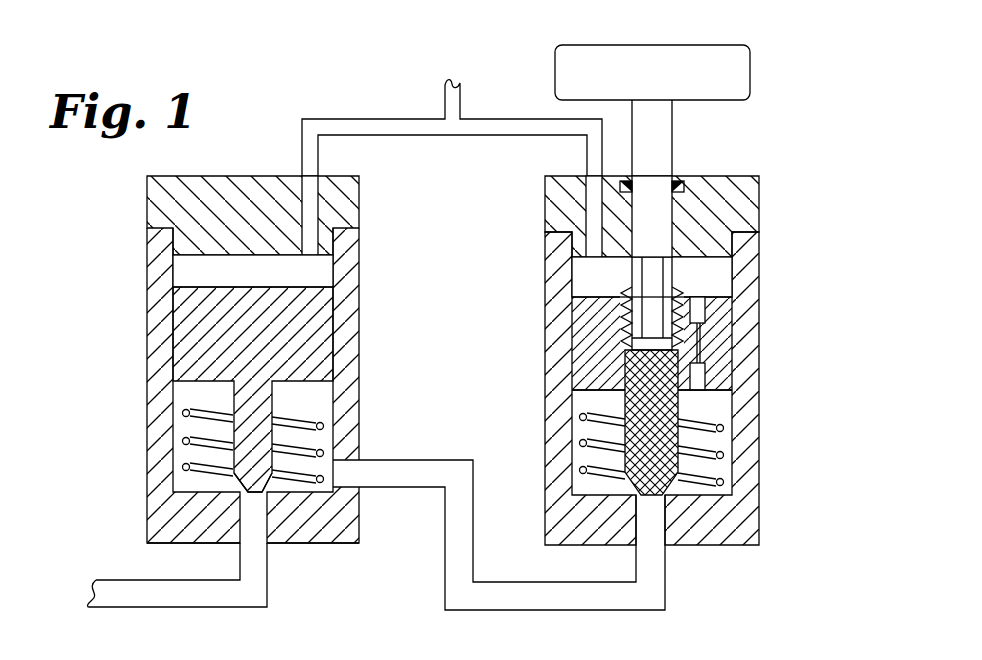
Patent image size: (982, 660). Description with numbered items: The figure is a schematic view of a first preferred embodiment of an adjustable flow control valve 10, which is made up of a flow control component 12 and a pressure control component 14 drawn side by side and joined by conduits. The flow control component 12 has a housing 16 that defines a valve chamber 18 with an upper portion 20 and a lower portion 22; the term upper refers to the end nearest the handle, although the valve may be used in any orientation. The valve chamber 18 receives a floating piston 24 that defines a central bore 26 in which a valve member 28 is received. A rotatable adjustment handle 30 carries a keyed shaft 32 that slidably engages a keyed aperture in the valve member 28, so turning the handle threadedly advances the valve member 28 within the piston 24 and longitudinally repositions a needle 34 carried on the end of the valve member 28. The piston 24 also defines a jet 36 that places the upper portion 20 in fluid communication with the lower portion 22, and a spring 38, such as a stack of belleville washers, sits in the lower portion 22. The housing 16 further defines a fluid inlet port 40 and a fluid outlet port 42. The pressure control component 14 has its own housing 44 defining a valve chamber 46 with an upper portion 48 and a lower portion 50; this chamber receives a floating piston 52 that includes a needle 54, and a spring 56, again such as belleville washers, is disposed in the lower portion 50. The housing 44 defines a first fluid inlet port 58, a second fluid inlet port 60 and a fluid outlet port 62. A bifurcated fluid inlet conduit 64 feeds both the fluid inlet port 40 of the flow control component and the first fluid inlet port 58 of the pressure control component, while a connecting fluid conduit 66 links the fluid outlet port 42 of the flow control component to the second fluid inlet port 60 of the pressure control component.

The adjustable flow control valve 10 is at (270, 79).
The flow control component 12 is at (813, 119).
The pressure control component 14 is at (123, 208).
The housing 16 is at (730, 262).
The valve chamber 18 is at (717, 405).
The upper portion 20 is at (583, 286).
The lower portion 22 is at (578, 481).
The floating piston 24 is at (583, 330).
The central bore 26 is at (612, 406).
The valve member 28 is at (697, 288).
The rotatable adjustment handle 30 is at (735, 62).
The keyed shaft 32 is at (717, 156).
The needle 34 is at (742, 496).
The jet 36 is at (707, 373).
The spring 38 is at (725, 452).
The fluid inlet port 40 is at (595, 262).
The fluid outlet port 42 is at (660, 484).
The housing 44 is at (160, 262).
The valve chamber 46 is at (188, 392).
The upper portion 48 is at (186, 278).
The lower portion 50 is at (178, 498).
The floating piston 52 is at (182, 330).
The needle 54 is at (246, 484).
The spring 56 is at (320, 452).
The first fluid inlet port 58 is at (313, 252).
The second fluid inlet port 60 is at (335, 474).
The fluid outlet port 62 is at (253, 512).
The bifurcated fluid inlet conduit 64 is at (473, 120).
The connecting fluid conduit 66 is at (556, 595).